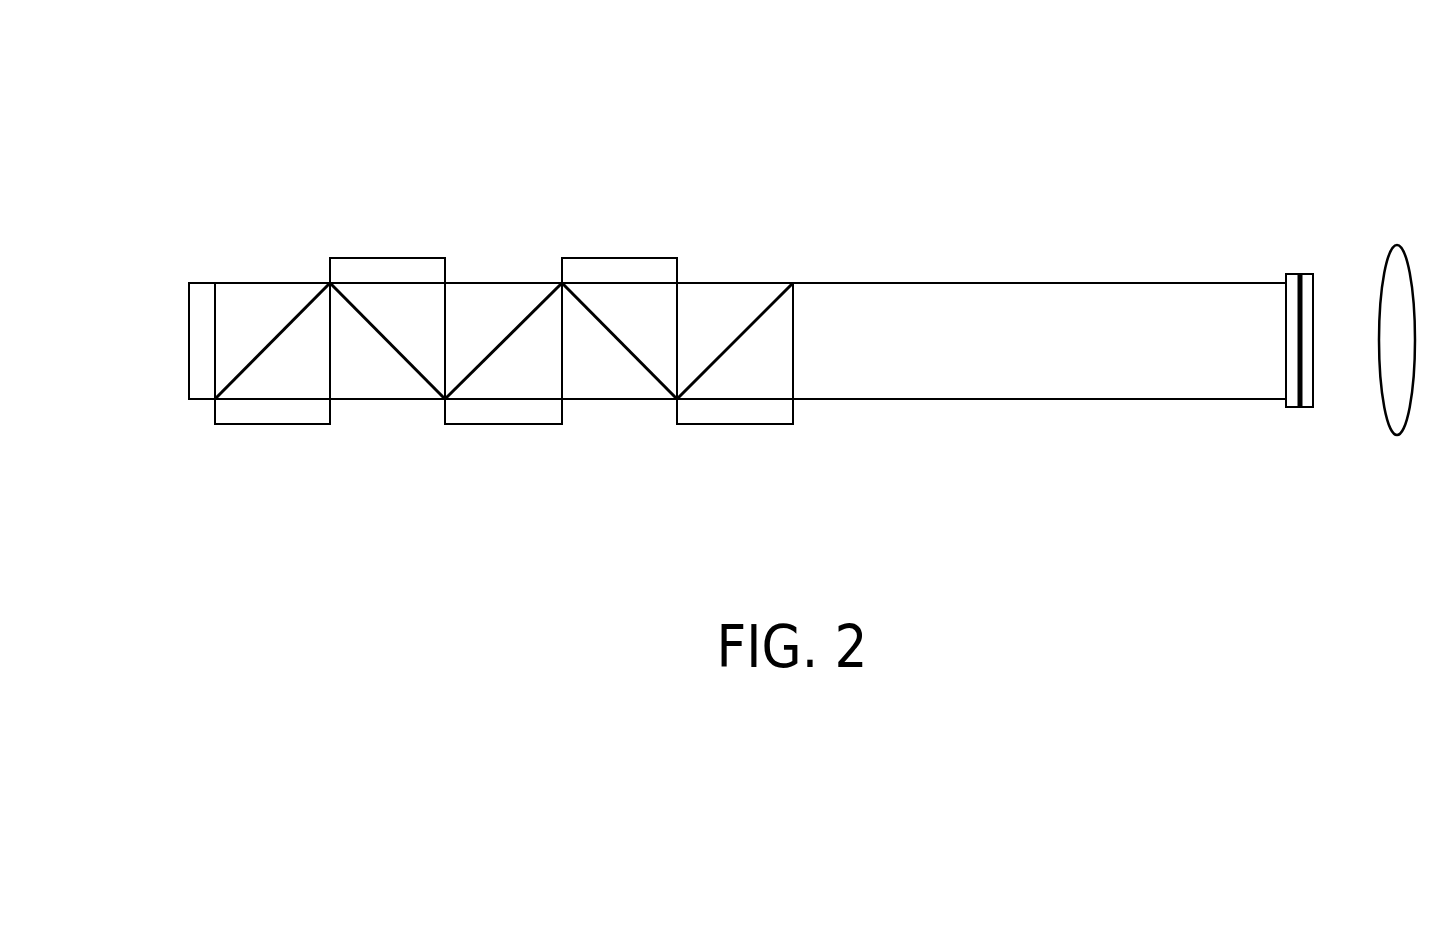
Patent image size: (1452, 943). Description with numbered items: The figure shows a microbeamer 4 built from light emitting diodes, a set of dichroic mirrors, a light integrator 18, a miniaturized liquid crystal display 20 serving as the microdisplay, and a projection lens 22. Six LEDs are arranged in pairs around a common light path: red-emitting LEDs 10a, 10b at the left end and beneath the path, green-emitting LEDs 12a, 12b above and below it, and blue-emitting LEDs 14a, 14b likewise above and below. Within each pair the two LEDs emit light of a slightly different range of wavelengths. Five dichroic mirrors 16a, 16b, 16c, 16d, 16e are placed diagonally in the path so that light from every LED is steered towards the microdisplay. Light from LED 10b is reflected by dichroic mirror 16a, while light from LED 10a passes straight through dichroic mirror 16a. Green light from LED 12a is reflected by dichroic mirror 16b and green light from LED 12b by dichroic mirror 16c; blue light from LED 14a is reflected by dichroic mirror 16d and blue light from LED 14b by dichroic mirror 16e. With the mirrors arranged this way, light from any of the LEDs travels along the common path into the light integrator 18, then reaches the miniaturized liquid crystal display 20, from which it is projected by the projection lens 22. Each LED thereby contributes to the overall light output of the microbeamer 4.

The microbeamer 4 is at (775, 112).
The light emitting diode 10a is at (189, 313).
The light emitting diode 10b is at (275, 425).
The light emitting diode 12a is at (373, 257).
The light emitting diode 12b is at (507, 425).
The light emitting diode 14a is at (605, 257).
The light emitting diode 14b is at (738, 425).
The dichroic mirror 16a is at (293, 318).
The dichroic mirror 16b is at (407, 365).
The dichroic mirror 16c is at (525, 318).
The dichroic mirror 16d is at (640, 365).
The dichroic mirror 16e is at (758, 318).
The light integrator 18 is at (1132, 282).
The miniaturized liquid crystal display 20 is at (1293, 274).
The projection lens 22 is at (1400, 242).